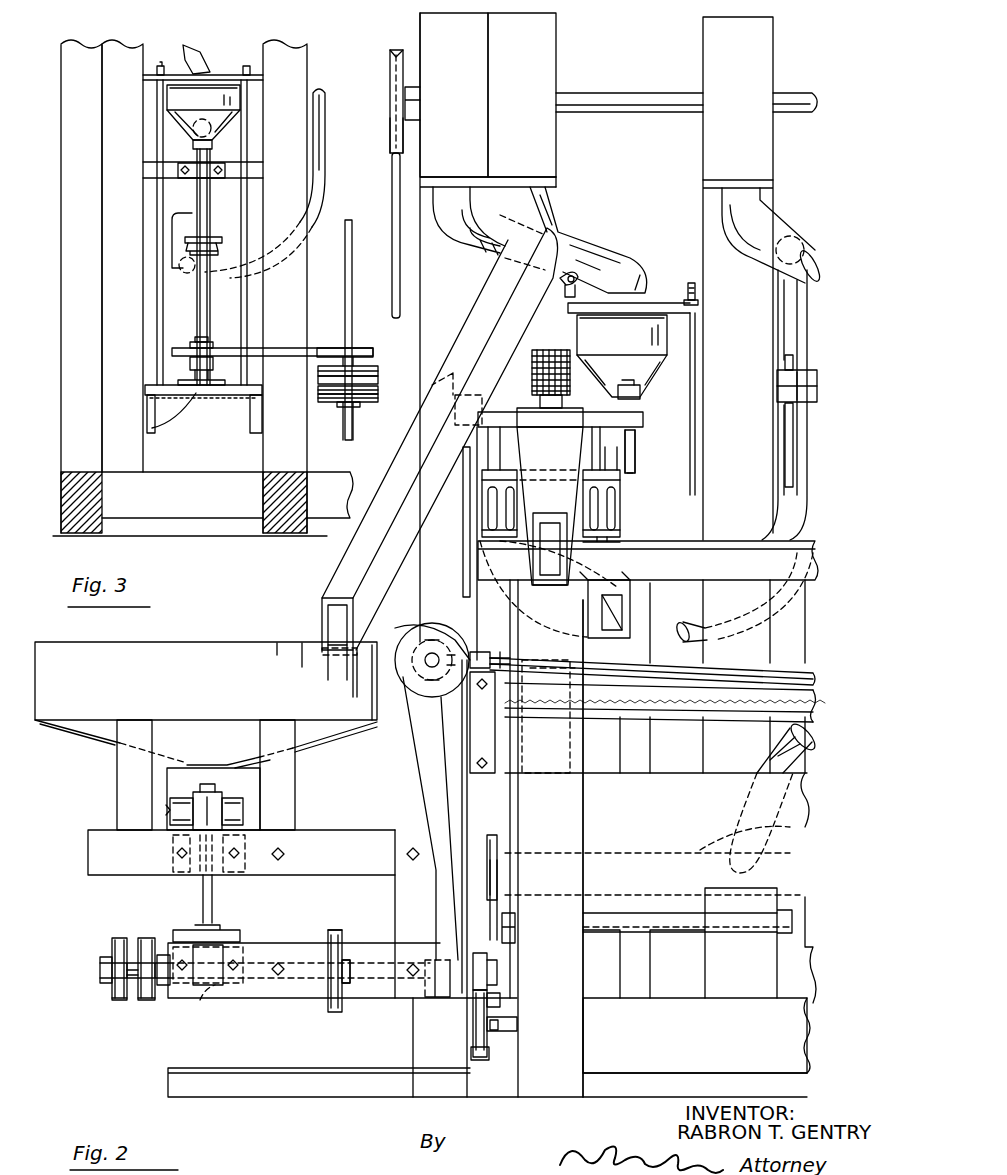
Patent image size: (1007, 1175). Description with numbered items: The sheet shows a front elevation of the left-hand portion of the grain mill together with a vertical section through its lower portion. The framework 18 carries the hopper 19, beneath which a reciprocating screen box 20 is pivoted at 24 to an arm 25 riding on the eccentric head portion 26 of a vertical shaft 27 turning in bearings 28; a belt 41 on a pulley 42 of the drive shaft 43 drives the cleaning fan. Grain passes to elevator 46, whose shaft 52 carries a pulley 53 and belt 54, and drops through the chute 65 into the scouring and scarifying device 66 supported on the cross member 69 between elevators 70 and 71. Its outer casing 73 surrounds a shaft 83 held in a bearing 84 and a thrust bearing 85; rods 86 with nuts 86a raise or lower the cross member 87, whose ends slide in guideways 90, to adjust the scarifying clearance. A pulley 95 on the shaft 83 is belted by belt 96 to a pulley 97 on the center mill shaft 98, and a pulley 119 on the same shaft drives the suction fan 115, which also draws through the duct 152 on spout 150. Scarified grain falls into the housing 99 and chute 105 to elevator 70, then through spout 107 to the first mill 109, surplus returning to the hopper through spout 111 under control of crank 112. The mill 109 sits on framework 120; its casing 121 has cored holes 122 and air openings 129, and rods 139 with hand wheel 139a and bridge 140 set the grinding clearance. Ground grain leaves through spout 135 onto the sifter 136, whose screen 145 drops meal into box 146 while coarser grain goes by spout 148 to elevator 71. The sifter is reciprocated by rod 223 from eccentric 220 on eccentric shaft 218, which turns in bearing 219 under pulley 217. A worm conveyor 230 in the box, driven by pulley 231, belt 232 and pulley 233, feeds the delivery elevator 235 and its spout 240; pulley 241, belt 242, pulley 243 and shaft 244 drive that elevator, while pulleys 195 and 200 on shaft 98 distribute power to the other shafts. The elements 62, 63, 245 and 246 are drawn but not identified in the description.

In FIG. 3, the framework 18 is at (325, 488).
In FIG. 2, the framework 18 is at (350, 832).
In FIG. 2, the hopper 19 is at (220, 650).
In FIG. 2, the reciprocating screen box 20 is at (246, 787).
In FIG. 2, the pivot 24 is at (166, 809).
In FIG. 2, the arm 25 is at (185, 788).
In FIG. 2, the eccentric head portion 26 is at (203, 788).
In FIG. 2, the vertically disposed shaft 27 is at (202, 902).
In FIG. 2, the bearings 28 is at (173, 852).
In FIG. 2, the belt 41 is at (146, 936).
In FIG. 2, the pulley 42 is at (138, 1000).
In FIG. 2, the drive shaft 43 is at (98, 969).
In FIG. 3, the elevator 46 is at (100, 48).
In FIG. 2, the elevator 46 is at (489, 555).
In FIG. 2, the shaft 52 is at (611, 92).
In FIG. 2, the pulley 53 is at (390, 67).
In FIG. 2, the belt 54 is at (390, 178).
In FIG. 2, the pulley 62 is at (118, 938).
In FIG. 2, the hub 63 is at (107, 955).
In FIG. 3, the pipe or chute 65 is at (210, 50).
In FIG. 2, the pipe or chute 65 is at (460, 244).
In FIG. 3, the scouring and scarifying device 66 is at (168, 100).
In FIG. 2, the scouring and scarifying device 66 is at (610, 379).
In FIG. 3, the cross member 69 is at (224, 76).
In FIG. 2, the cross member 69 is at (660, 303).
In FIG. 3, the elevator 70 is at (112, 46).
In FIG. 2, the elevator 70 is at (569, 393).
In FIG. 3, the elevator 71 is at (298, 46).
In FIG. 2, the elevator 71 is at (718, 510).
In FIG. 3, the outer casing 73 is at (203, 97).
In FIG. 2, the outer casing 73 is at (622, 335).
In FIG. 3, the shaft 83 is at (207, 200).
In FIG. 2, the shaft 83 is at (633, 464).
In FIG. 3, the bearing 84 is at (205, 149).
In FIG. 3, the thrust bearing 85 is at (207, 375).
In FIG. 3, the vertically disposed rods 86 is at (156, 198).
In FIG. 2, the vertically disposed rods 86 is at (696, 288).
In FIG. 3, the nuts 86a is at (157, 71).
In FIG. 2, the nuts 86a is at (698, 303).
In FIG. 3, the cross member 87 is at (196, 398).
In FIG. 3, the guideways 90 is at (152, 438).
In FIG. 3, the pulley 95 is at (213, 351).
In FIG. 3, the belt 96 is at (291, 351).
In FIG. 3, the pulley 97 is at (332, 352).
In FIG. 3, the center mill shaft 98 is at (346, 278).
In FIG. 3, the housing 99 is at (228, 118).
In FIG. 2, the housing 99 is at (644, 375).
In FIG. 3, the chute 105 is at (184, 413).
In FIG. 2, the spout 107 is at (554, 208).
In FIG. 2, the first mill 109 is at (475, 513).
In FIG. 2, the spout 111 is at (480, 294).
In FIG. 2, the crank 112 is at (576, 281).
In FIG. 3, the suction fan 115 is at (178, 228).
In FIG. 3, the pulley 119 is at (204, 230).
In FIG. 2, the supporting framework 120 is at (718, 542).
In FIG. 2, the outer casing 121 is at (622, 532).
In FIG. 2, the cored holes 122 is at (620, 506).
In FIG. 2, the openings 129 is at (503, 453).
In FIG. 2, the spout 135 is at (632, 585).
In FIG. 2, the reciprocating sifter 136 is at (690, 722).
In FIG. 2, the rods 139 is at (463, 548).
In FIG. 2, the hand wheel 139a is at (480, 365).
In FIG. 2, the second bridge 140 is at (501, 404).
In FIG. 2, the screen 145 is at (571, 714).
In FIG. 2, the box 146 is at (695, 768).
In FIG. 2, the spout 148 is at (768, 754).
In FIG. 2, the spout 150 is at (780, 228).
In FIG. 3, the duct 152 is at (330, 112).
In FIG. 2, the duct 152 is at (778, 316).
In FIG. 3, the pulley 195 is at (318, 370).
In FIG. 3, the pulley 200 is at (318, 390).
In FIG. 2, the pulley 217 is at (421, 630).
In FIG. 2, the eccentric shaft 218 is at (430, 660).
In FIG. 2, the bearing 219 is at (456, 717).
In FIG. 2, the eccentric 220 is at (473, 646).
In FIG. 2, the rod 223 is at (754, 673).
In FIG. 2, the worm conveyor 230 is at (718, 830).
In FIG. 2, the pulley 231 is at (476, 836).
In FIG. 2, the belt 232 is at (507, 934).
In FIG. 2, the pulley 233 is at (497, 962).
In FIG. 2, the delivery elevator 235 is at (583, 800).
In FIG. 2, the delivery spout 240 is at (570, 585).
In FIG. 2, the pulley 241 is at (487, 990).
In FIG. 2, the belt 242 is at (343, 938).
In FIG. 2, the pulley 243 is at (498, 1051).
In FIG. 2, the shaft 244 is at (334, 930).
In FIG. 2, the bracket 245 is at (444, 961).
In FIG. 2, the belt 246 is at (416, 744).